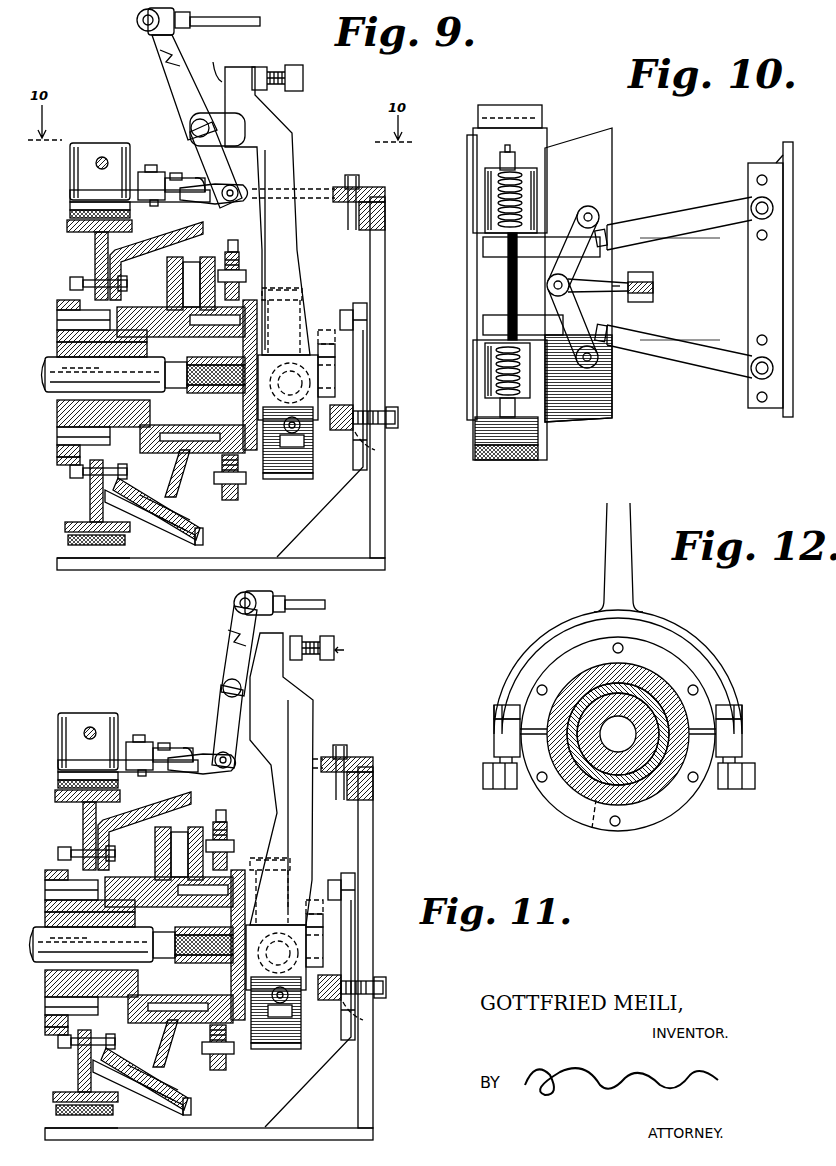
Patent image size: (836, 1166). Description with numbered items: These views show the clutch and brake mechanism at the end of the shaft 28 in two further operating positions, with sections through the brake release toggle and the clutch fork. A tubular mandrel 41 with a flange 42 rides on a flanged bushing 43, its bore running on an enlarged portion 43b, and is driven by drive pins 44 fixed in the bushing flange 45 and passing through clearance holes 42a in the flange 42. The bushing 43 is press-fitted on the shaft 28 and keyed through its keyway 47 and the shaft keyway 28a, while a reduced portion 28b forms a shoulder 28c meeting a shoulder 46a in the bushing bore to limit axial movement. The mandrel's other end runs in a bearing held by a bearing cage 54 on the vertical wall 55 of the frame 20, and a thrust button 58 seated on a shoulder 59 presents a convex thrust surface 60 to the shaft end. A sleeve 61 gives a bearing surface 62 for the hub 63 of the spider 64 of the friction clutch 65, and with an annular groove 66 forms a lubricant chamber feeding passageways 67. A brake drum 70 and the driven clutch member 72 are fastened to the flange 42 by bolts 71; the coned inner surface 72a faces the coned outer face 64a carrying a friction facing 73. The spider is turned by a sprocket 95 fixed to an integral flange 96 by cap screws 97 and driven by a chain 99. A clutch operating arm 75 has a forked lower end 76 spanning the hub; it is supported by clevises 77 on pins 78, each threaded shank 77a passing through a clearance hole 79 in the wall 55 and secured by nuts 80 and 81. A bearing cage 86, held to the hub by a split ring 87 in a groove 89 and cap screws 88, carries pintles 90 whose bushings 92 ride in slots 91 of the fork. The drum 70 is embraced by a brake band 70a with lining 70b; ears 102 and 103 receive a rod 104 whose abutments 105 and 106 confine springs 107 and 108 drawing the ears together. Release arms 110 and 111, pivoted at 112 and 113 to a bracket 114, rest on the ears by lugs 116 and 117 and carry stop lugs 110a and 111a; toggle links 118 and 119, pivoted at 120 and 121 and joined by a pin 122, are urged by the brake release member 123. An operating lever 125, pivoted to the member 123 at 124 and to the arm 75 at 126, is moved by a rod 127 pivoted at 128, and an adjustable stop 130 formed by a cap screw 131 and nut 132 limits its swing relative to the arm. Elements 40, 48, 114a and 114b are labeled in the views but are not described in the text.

In FIG. 9, the supporting frame 20 is at (205, 570).
In FIG. 11, the supporting frame 20 is at (209, 1144).
In FIG. 9, the shaft 28 is at (50, 385).
In FIG. 11, the shaft 28 is at (81, 944).
In FIG. 9, the keyway 28a is at (88, 370).
In FIG. 11, the keyway 28a is at (69, 939).
In FIG. 9, the reduced portion 28b is at (165, 375).
In FIG. 11, the reduced portion 28b is at (131, 945).
In FIG. 9, the shoulder 28c is at (165, 290).
In FIG. 11, the shoulder 28c is at (147, 855).
In FIG. 9, the flange member 40 is at (195, 495).
In FIG. 11, the flange member 40 is at (160, 1065).
In FIG. 9, the tubular mandrel 41 is at (250, 335).
In FIG. 11, the tubular mandrel 41 is at (250, 953).
In FIG. 12, the tubular mandrel 41 is at (645, 770).
In FIG. 9, the flange 42 is at (82, 268).
In FIG. 11, the flange 42 is at (76, 830).
In FIG. 9, the clearance holes 42a is at (60, 303).
In FIG. 11, the clearance holes 42a is at (103, 929).
In FIG. 9, the flanged bushing 43 is at (60, 336).
In FIG. 11, the flanged bushing 43 is at (76, 894).
In FIG. 9, the enlarged portion 43b is at (80, 412).
In FIG. 11, the enlarged portion 43b is at (77, 980).
In FIG. 9, the drive pins 44 is at (60, 318).
In FIG. 11, the drive pins 44 is at (58, 936).
In FIG. 9, the flange 45 is at (58, 461).
In FIG. 11, the flange 45 is at (43, 1022).
In FIG. 10, the flange 45 is at (467, 270).
In FIG. 9, the shoulder 46a is at (178, 470).
In FIG. 11, the shoulder 46a is at (155, 1043).
In FIG. 9, the keyway 47 is at (100, 352).
In FIG. 11, the keyway 47 is at (77, 909).
In FIG. 9, the shaft end 48 is at (46, 366).
In FIG. 11, the shaft end 48 is at (28, 936).
In FIG. 9, the bearing cage 54 is at (367, 365).
In FIG. 11, the bearing cage 54 is at (373, 956).
In FIG. 9, the vertical transverse wall 55 is at (385, 256).
In FIG. 11, the vertical transverse wall 55 is at (336, 947).
In FIG. 10, the vertical transverse wall 55 is at (783, 145).
In FIG. 9, the thrust button 58 is at (175, 378).
In FIG. 11, the thrust button 58 is at (198, 944).
In FIG. 9, the shoulder 59 is at (172, 412).
In FIG. 11, the shoulder 59 is at (196, 959).
In FIG. 9, the thrust surface 60 is at (192, 386).
In FIG. 11, the thrust surface 60 is at (204, 941).
In FIG. 9, the sleeve 61 is at (235, 325).
In FIG. 11, the sleeve 61 is at (183, 896).
In FIG. 12, the sleeve 61 is at (632, 785).
In FIG. 9, the bearing surface 62 is at (243, 330).
In FIG. 11, the bearing surface 62 is at (259, 945).
In FIG. 9, the hub 63 is at (264, 290).
In FIG. 11, the hub 63 is at (270, 872).
In FIG. 12, the hub 63 is at (570, 770).
In FIG. 9, the clutch spider 64 is at (168, 290).
In FIG. 11, the clutch spider 64 is at (154, 853).
In FIG. 9, the outer face 64a is at (200, 525).
In FIG. 11, the outer face 64a is at (167, 1079).
In FIG. 9, the friction clutch 65 is at (160, 238).
In FIG. 11, the friction clutch 65 is at (144, 817).
In FIG. 9, the annular groove 66 is at (160, 452).
In FIG. 11, the annular groove 66 is at (180, 1016).
In FIG. 9, the passageways 67 is at (205, 288).
In FIG. 11, the passageways 67 is at (193, 853).
In FIG. 9, the brake drum 70 is at (65, 527).
In FIG. 11, the brake drum 70 is at (69, 1066).
In FIG. 10, the brake drum 70 is at (538, 440).
In FIG. 9, the brake band 70a is at (68, 541).
In FIG. 11, the brake band 70a is at (65, 1109).
In FIG. 10, the brake band 70a is at (500, 462).
In FIG. 9, the brake lining 70b is at (140, 552).
In FIG. 11, the brake lining 70b is at (81, 1137).
In FIG. 9, the bolts 71 is at (70, 283).
In FIG. 11, the bolts 71 is at (70, 940).
In FIG. 9, the driven clutch member 72 is at (142, 535).
In FIG. 11, the driven clutch member 72 is at (138, 1087).
In FIG. 10, the driven clutch member 72 is at (592, 420).
In FIG. 9, the coned inner surface 72a is at (160, 540).
In FIG. 11, the coned inner surface 72a is at (155, 1102).
In FIG. 9, the friction facing 73 is at (196, 535).
In FIG. 11, the friction facing 73 is at (203, 1106).
In FIG. 9, the clutch operating arm 75 is at (297, 130).
In FIG. 11, the clutch operating arm 75 is at (297, 779).
In FIG. 12, the clutch operating arm 75 is at (605, 558).
In FIG. 9, the forked lower end 76 is at (300, 297).
In FIG. 11, the forked lower end 76 is at (290, 915).
In FIG. 12, the forked lower end 76 is at (500, 672).
In FIG. 9, the clevises 77 is at (295, 435).
In FIG. 11, the clevises 77 is at (304, 1008).
In FIG. 12, the clevises 77 is at (494, 789).
In FIG. 9, the threaded shank 77a is at (398, 422).
In FIG. 11, the threaded shank 77a is at (402, 991).
In FIG. 9, the pins 78 is at (290, 475).
In FIG. 11, the pins 78 is at (288, 1033).
In FIG. 12, the pins 78 is at (483, 775).
In FIG. 9, the clearance hole 79 is at (382, 453).
In FIG. 11, the clearance hole 79 is at (376, 1015).
In FIG. 9, the nut 80 is at (396, 415).
In FIG. 11, the nut 80 is at (380, 980).
In FIG. 9, the nut 81 is at (355, 412).
In FIG. 11, the nut 81 is at (357, 975).
In FIG. 9, the bearing cage 86 is at (300, 470).
In FIG. 11, the bearing cage 86 is at (289, 1017).
In FIG. 9, the split ring 87 is at (268, 479).
In FIG. 11, the split ring 87 is at (276, 1056).
In FIG. 12, the split ring 87 is at (580, 812).
In FIG. 9, the cap screws 88 is at (240, 480).
In FIG. 11, the cap screws 88 is at (237, 1052).
In FIG. 12, the cap screws 88 is at (697, 690).
In FIG. 12, the groove 89 is at (588, 821).
In FIG. 9, the pintles 90 is at (313, 350).
In FIG. 11, the pintles 90 is at (314, 914).
In FIG. 12, the pintles 90 is at (500, 730).
In FIG. 9, the slots 91 is at (305, 342).
In FIG. 11, the slots 91 is at (310, 898).
In FIG. 12, the slots 91 is at (500, 712).
In FIG. 9, the bushing 92 is at (335, 368).
In FIG. 11, the bushing 92 is at (328, 923).
In FIG. 12, the bushing 92 is at (500, 745).
In FIG. 9, the sprocket 95 is at (236, 244).
In FIG. 11, the sprocket 95 is at (232, 808).
In FIG. 9, the integral flange 96 is at (222, 268).
In FIG. 11, the integral flange 96 is at (216, 841).
In FIG. 9, the cap screws 97 is at (246, 270).
In FIG. 11, the cap screws 97 is at (238, 833).
In FIG. 9, the chain 99 is at (236, 484).
In FIG. 11, the chain 99 is at (232, 1069).
In FIG. 10, the ear 102 is at (485, 388).
In FIG. 9, the ear 103 is at (70, 152).
In FIG. 11, the ear 103 is at (68, 739).
In FIG. 10, the ear 103 is at (478, 180).
In FIG. 9, the rod 104 is at (102, 157).
In FIG. 11, the rod 104 is at (95, 712).
In FIG. 10, the rod 104 is at (508, 270).
In FIG. 10, the abutment 105 is at (500, 160).
In FIG. 10, the abutment 106 is at (500, 410).
In FIG. 10, the compression spring 107 is at (498, 210).
In FIG. 10, the compression spring 108 is at (496, 372).
In FIG. 10, the arm 110 is at (672, 350).
In FIG. 10, the lug 110a is at (610, 348).
In FIG. 9, the arm 111 is at (313, 192).
In FIG. 11, the arm 111 is at (320, 745).
In FIG. 10, the arm 111 is at (708, 210).
In FIG. 10, the lug 111a is at (608, 228).
In FIG. 10, the pivot 112 is at (750, 368).
In FIG. 9, the pivot 113 is at (365, 190).
In FIG. 11, the pivot 113 is at (361, 770).
In FIG. 10, the pivot 113 is at (758, 200).
In FIG. 9, the bracket 114 is at (345, 205).
In FIG. 11, the bracket 114 is at (341, 786).
In FIG. 10, the bracket 114 is at (748, 284).
In FIG. 10, the lower screws 114a is at (757, 340).
In FIG. 10, the upper screws 114b is at (757, 180).
In FIG. 10, the lug 116 is at (483, 325).
In FIG. 9, the lug 117 is at (70, 198).
In FIG. 11, the lug 117 is at (111, 773).
In FIG. 10, the lug 117 is at (483, 244).
In FIG. 9, the link 118 is at (170, 178).
In FIG. 11, the link 118 is at (161, 728).
In FIG. 10, the link 118 is at (575, 312).
In FIG. 9, the link 119 is at (200, 178).
In FIG. 11, the link 119 is at (195, 738).
In FIG. 10, the link 119 is at (578, 262).
In FIG. 10, the pivot 120 is at (588, 368).
In FIG. 9, the pivot 121 is at (182, 168).
In FIG. 11, the pivot 121 is at (165, 731).
In FIG. 10, the pivot 121 is at (594, 207).
In FIG. 9, the pin 122 is at (152, 170).
In FIG. 11, the pin 122 is at (138, 745).
In FIG. 10, the pin 122 is at (548, 284).
In FIG. 9, the brake release member 123 is at (205, 204).
In FIG. 11, the brake release member 123 is at (204, 772).
In FIG. 10, the brake release member 123 is at (620, 295).
In FIG. 9, the pivot 124 is at (225, 200).
In FIG. 11, the pivot 124 is at (241, 747).
In FIG. 9, the operating lever 125 is at (165, 88).
In FIG. 11, the operating lever 125 is at (226, 651).
In FIG. 10, the operating lever 125 is at (646, 272).
In FIG. 9, the pivot 126 is at (192, 125).
In FIG. 11, the pivot 126 is at (214, 718).
In FIG. 9, the rod 127 is at (260, 20).
In FIG. 11, the rod 127 is at (316, 603).
In FIG. 9, the pivot 128 is at (138, 22).
In FIG. 11, the pivot 128 is at (236, 603).
In FIG. 9, the adjustable stop means 130 is at (206, 68).
In FIG. 11, the adjustable stop means 130 is at (353, 649).
In FIG. 9, the cap screw 131 is at (303, 78).
In FIG. 11, the cap screw 131 is at (333, 641).
In FIG. 9, the nut 132 is at (262, 67).
In FIG. 11, the nut 132 is at (307, 637).